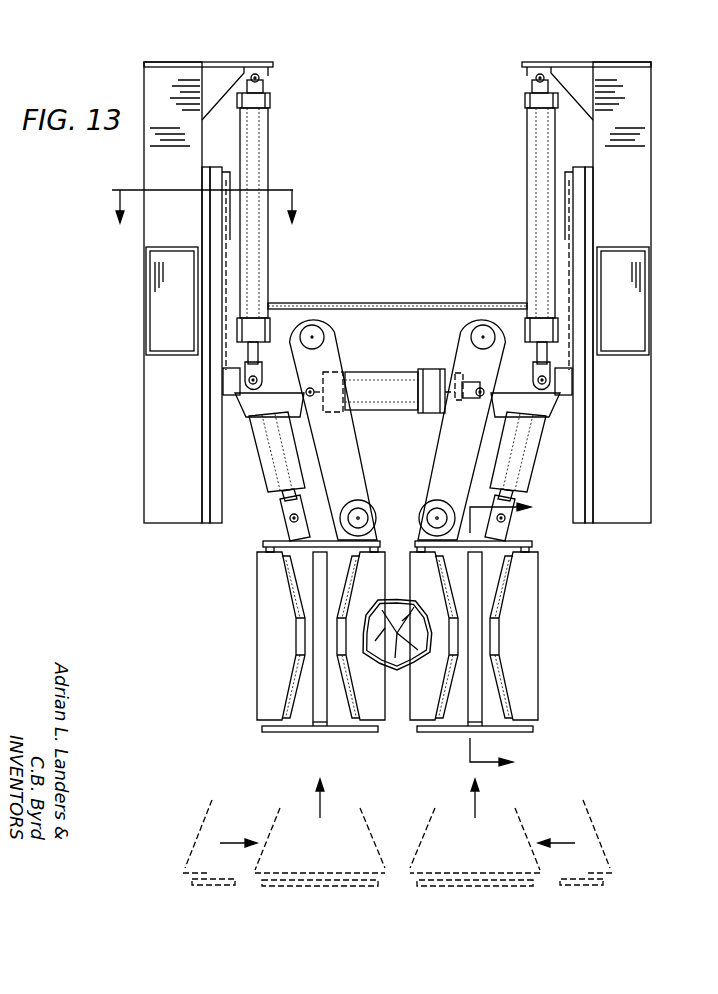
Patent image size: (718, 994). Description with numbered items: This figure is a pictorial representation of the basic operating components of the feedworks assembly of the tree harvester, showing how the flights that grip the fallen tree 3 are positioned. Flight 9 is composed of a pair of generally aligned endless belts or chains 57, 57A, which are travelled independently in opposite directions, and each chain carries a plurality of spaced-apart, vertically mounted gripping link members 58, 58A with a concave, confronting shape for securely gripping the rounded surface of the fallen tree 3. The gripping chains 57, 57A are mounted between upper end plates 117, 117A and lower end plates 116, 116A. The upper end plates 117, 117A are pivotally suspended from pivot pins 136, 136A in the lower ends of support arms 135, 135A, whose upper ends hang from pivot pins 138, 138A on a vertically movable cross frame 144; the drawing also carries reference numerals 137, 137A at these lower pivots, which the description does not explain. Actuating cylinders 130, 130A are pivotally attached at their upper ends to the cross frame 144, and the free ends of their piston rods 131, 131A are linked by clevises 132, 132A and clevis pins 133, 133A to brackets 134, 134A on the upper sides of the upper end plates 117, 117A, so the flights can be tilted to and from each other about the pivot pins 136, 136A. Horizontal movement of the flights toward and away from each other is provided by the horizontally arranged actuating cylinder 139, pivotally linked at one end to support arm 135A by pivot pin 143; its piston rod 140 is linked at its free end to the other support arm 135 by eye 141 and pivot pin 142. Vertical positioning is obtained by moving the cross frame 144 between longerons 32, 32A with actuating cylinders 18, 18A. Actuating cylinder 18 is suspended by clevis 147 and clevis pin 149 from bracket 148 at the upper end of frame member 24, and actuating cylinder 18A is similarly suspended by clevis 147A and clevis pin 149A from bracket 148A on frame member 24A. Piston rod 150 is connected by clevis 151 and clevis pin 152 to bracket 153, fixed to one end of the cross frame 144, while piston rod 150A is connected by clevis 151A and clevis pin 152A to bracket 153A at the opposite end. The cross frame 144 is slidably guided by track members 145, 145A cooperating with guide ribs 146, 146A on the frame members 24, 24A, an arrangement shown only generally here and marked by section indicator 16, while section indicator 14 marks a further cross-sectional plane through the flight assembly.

The fallen tree 3 is at (397, 668).
The flight 9 is at (497, 639).
The section line 14- 14 is at (514, 635).
The section line 16- 16 is at (203, 217).
The actuating cylinder 18 is at (527, 135).
The actuating cylinder 18A is at (268, 130).
The frame member 24 is at (653, 190).
The frame member 24A is at (146, 140).
The longeron 32 is at (654, 268).
The longeron 32A is at (146, 306).
The endless belt or chain 57 is at (492, 600).
The endless belt or chain 57A is at (300, 625).
The gripping link member 58 is at (512, 662).
The gripping link member 58A is at (290, 650).
The lower end plate 116 is at (530, 729).
The lower end plate 116A is at (262, 729).
The upper end plate 117 is at (480, 556).
The upper end plate 117A is at (320, 598).
The actuating cylinder 130 is at (533, 444).
The actuating cylinder 130A is at (263, 448).
The piston rod 131 is at (514, 484).
The piston rod 131A is at (273, 489).
The clevis 132 is at (512, 518).
The clevis 132A is at (288, 517).
The clevis pin 133 is at (494, 490).
The clevis pin 133A is at (278, 533).
The bracket 134 is at (525, 540).
The bracket 134A is at (273, 546).
The support arm 135 is at (436, 437).
The support arm 135A is at (358, 441).
The pivot pin 136 is at (439, 507).
The pivot pin 136A is at (360, 507).
The boss 137 is at (418, 526).
The boss 137A is at (341, 515).
The pivot pin 138 is at (470, 337).
The pivot pin 138A is at (324, 337).
The actuating cylinder 139 is at (388, 376).
The piston rod 140 is at (459, 380).
The eye 141 is at (483, 389).
The pivot pin 142 is at (481, 398).
The pivot pin 143 is at (306, 392).
The cross frame 144 is at (412, 303).
The track member 145 is at (582, 210).
The track member 145A is at (206, 214).
The guide rib 146 is at (579, 453).
The guide rib 146A is at (216, 433).
The clevis 147 is at (532, 78).
The clevis 147A is at (266, 84).
The bracket 148 is at (553, 70).
The bracket 148A is at (241, 68).
The clevis pin 149 is at (537, 82).
The clevis pin 149A is at (261, 76).
The piston rod 150 is at (548, 352).
The piston rod 150A is at (248, 352).
The clevis 151 is at (551, 366).
The clevis 151A is at (243, 364).
The clevis pin 152 is at (572, 382).
The clevis pin 152A is at (223, 381).
The bracket 153 is at (560, 402).
The bracket 153A is at (247, 401).